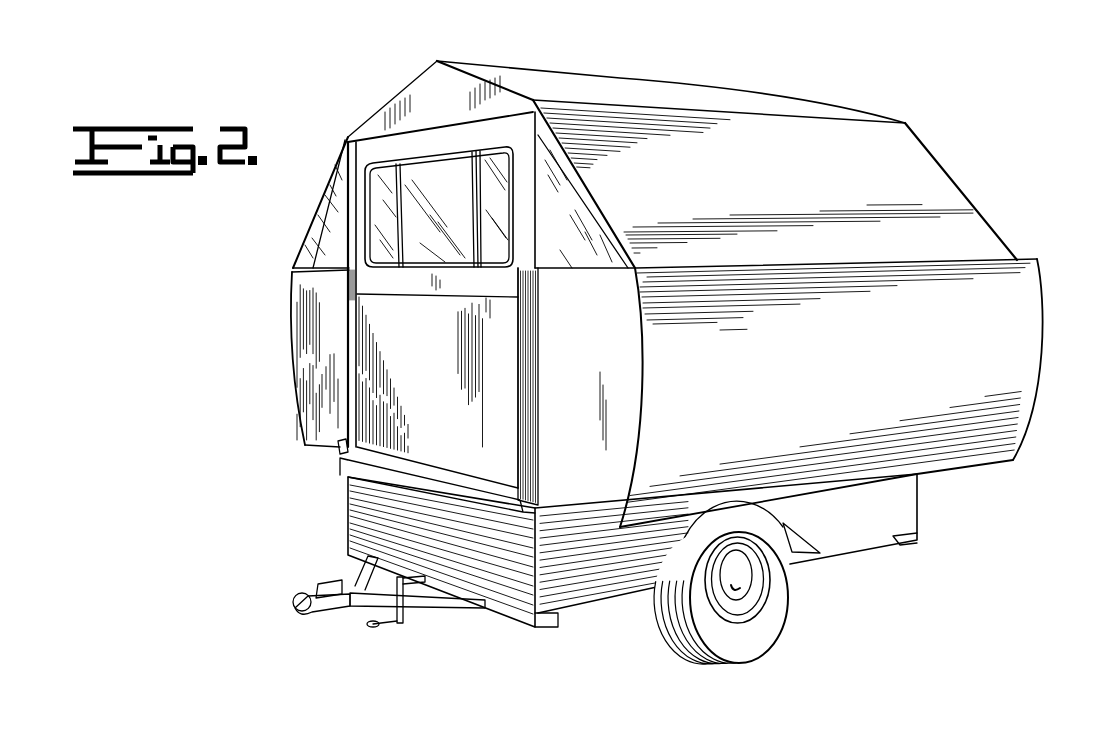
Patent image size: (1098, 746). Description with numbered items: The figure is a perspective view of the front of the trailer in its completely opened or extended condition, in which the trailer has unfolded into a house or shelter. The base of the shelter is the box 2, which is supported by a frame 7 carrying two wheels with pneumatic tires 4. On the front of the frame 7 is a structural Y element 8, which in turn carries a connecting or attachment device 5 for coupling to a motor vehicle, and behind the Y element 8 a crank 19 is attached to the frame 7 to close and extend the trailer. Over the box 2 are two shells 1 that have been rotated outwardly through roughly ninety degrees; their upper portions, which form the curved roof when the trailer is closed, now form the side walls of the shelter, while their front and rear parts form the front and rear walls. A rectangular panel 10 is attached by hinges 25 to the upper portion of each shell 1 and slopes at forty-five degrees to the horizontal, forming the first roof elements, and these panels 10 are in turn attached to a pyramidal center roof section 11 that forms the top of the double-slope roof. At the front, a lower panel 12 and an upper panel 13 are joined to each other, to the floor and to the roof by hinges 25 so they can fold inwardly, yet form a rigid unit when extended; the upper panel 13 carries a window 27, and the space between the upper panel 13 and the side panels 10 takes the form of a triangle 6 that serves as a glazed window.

The shells 1 is at (292, 360).
The box 2 is at (372, 524).
The pneumatic tires 4 is at (773, 612).
The connecting or attachment device 5 is at (298, 597).
The triangle 6 is at (333, 238).
The frame 7 is at (905, 541).
The Y element 8 is at (442, 600).
The panel 10 is at (326, 193).
The center roof section 11 is at (845, 108).
The lower panel 12 is at (387, 381).
The upper panel 13 is at (476, 131).
The crank 19 is at (387, 626).
The hinges 25 is at (534, 102).
The window 27 is at (403, 248).